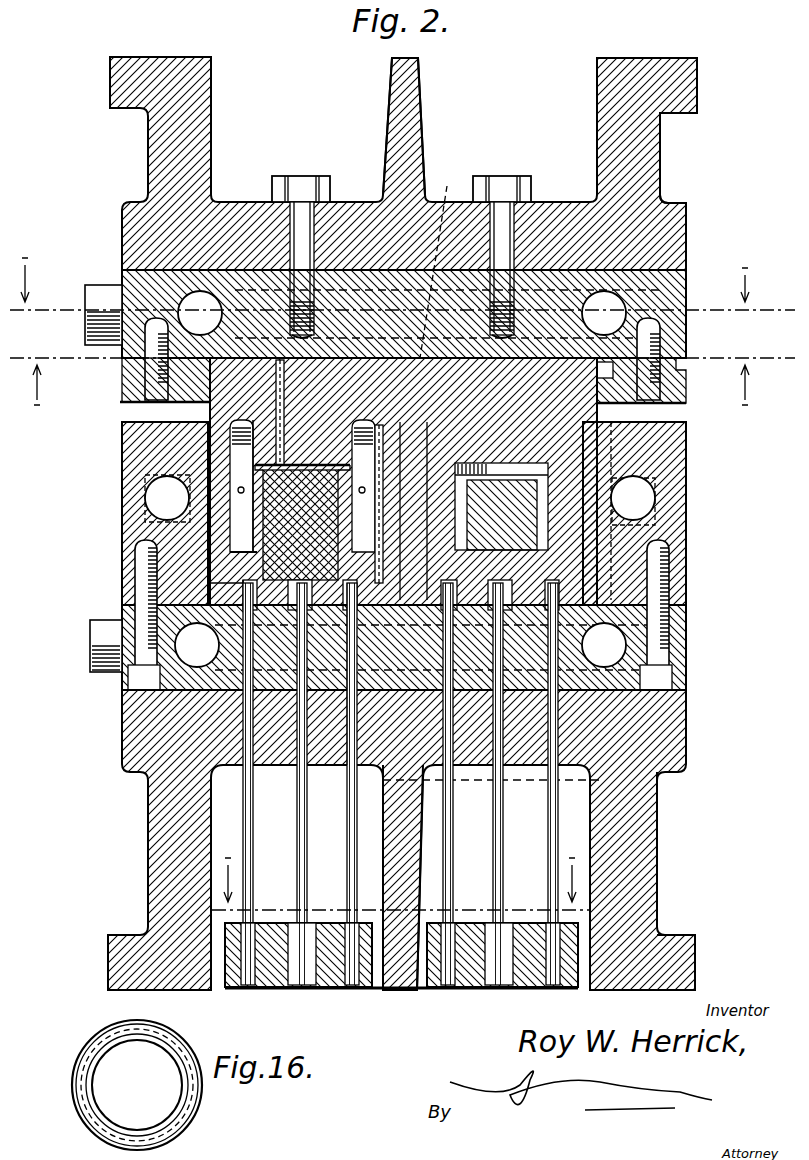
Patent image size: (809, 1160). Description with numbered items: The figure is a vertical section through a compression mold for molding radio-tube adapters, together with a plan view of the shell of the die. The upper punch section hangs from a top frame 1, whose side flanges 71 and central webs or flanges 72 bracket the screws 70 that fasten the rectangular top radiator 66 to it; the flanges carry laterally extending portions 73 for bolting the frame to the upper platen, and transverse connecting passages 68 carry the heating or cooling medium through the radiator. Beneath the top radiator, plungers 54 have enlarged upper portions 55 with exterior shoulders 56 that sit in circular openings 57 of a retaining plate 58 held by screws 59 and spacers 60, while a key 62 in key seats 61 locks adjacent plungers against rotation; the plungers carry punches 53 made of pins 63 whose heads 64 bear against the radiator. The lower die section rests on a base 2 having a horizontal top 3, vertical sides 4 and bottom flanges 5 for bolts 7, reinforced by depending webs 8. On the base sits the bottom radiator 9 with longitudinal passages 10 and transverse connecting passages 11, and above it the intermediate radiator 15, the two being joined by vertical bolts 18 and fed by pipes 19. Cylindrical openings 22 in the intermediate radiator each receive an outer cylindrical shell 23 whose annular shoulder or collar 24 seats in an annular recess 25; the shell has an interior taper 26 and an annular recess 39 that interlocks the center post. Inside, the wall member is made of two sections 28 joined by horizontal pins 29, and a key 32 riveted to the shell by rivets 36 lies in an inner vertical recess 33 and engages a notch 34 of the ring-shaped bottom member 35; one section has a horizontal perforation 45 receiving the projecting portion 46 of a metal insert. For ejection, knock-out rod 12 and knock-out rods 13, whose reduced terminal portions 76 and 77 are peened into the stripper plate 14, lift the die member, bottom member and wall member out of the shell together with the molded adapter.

In FIG. 2, the top frame 1 is at (690, 217).
In FIG. 2, the base 2 is at (668, 773).
In FIG. 2, the horizontal top 3 is at (300, 778).
In FIG. 2, the vertical sides 4 is at (668, 848).
In FIG. 2, the bottom flanges 5 is at (675, 936).
In FIG. 2, the bolts 7 is at (400, 884).
In FIG. 2, the depending webs 8 is at (392, 818).
In FIG. 2, the bottom radiator 9 is at (688, 651).
In FIG. 2, the longitudinal passages 10 is at (604, 645).
In FIG. 2, the transverse connecting passages 11 is at (522, 776).
In FIG. 2, the knock-out rod 12 is at (292, 842).
In FIG. 2, the knock-out rods 13 is at (253, 864).
In FIG. 2, the stripper plate 14 is at (467, 988).
In FIG. 2, the intermediate radiator 15 is at (688, 498).
In FIG. 2, the vertical bolts 18 is at (688, 628).
In FIG. 2, the pipes 19 is at (105, 668).
In FIG. 2, the cylindrical openings 22 is at (443, 500).
In FIG. 2, the outer cylindrical shell 23 is at (230, 458).
In FIG. 16, the outer cylindrical shell 23 is at (122, 1042).
In FIG. 2, the annular shoulder or collar 24 is at (140, 617).
In FIG. 16, the annular shoulder or collar 24 is at (74, 1085).
In FIG. 2, the annular recess 25 is at (205, 592).
In FIG. 2, the interior taper 26 is at (240, 470).
In FIG. 16, the interior taper 26 is at (118, 1046).
In FIG. 2, the sections 28 is at (256, 490).
In FIG. 2, the horizontal pins 29 is at (362, 486).
In FIG. 2, the key 32 is at (453, 538).
In FIG. 2, the inner vertical recess 33 is at (286, 430).
In FIG. 2, the notch 34 is at (348, 605).
In FIG. 2, the bottom member 35 is at (247, 567).
In FIG. 2, the rivets 36 is at (148, 500).
In FIG. 2, the annular recess 39 is at (197, 645).
In FIG. 2, the horizontal perforation 45 is at (598, 470).
In FIG. 2, the projecting portion 46 is at (590, 520).
In FIG. 2, the punches 53 is at (300, 469).
In FIG. 2, the plungers 54 is at (688, 432).
In FIG. 2, the enlarged upper portions 55 is at (210, 405).
In FIG. 2, the exterior shoulders 56 is at (604, 405).
In FIG. 2, the circular openings 57 is at (586, 396).
In FIG. 2, the retaining plate 58 is at (690, 396).
In FIG. 2, the screws 59 is at (690, 352).
In FIG. 2, the spacers 60 is at (690, 368).
In FIG. 2, the key seats 61 is at (585, 422).
In FIG. 2, the key 62 is at (497, 200).
In FIG. 2, the pins 63 is at (598, 420).
In FIG. 2, the heads 64 is at (284, 268).
In FIG. 2, the top radiator 66 is at (688, 295).
In FIG. 2, the transverse connecting passages 68 is at (439, 261).
In FIG. 2, the screws 70 is at (303, 185).
In FIG. 2, the side flanges 71 is at (662, 160).
In FIG. 2, the central webs or flanges 72 is at (421, 116).
In FIG. 2, the laterally extending portions 73 is at (698, 82).
In FIG. 2, the reduced terminal portion 76 is at (302, 986).
In FIG. 2, the reduced terminal portions 77 is at (248, 985).